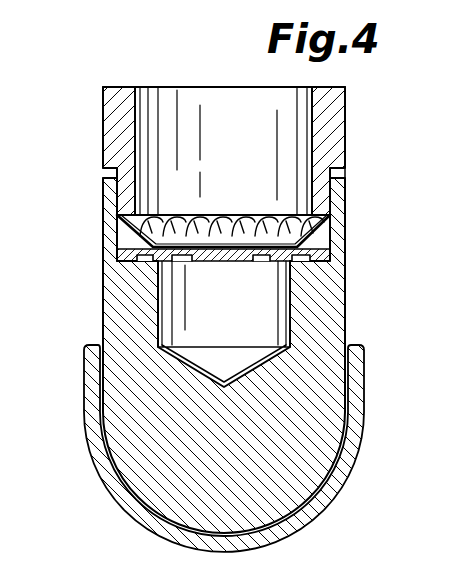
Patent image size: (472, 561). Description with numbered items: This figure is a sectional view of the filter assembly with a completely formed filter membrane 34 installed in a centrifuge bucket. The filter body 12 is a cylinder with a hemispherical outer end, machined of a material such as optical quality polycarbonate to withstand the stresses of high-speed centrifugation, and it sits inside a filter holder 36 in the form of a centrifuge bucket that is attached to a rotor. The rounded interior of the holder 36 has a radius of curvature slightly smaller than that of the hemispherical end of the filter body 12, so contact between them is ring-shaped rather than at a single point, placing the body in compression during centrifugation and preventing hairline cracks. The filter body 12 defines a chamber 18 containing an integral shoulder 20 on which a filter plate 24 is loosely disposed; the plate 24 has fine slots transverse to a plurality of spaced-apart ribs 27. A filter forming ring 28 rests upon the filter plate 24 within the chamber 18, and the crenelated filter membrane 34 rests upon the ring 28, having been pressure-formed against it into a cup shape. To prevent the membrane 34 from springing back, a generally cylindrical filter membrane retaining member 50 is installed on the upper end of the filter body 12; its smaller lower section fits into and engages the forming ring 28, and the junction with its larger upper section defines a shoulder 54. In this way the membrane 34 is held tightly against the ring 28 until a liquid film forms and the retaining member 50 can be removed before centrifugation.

The filter body 12 is at (290, 465).
The chamber 18 is at (255, 316).
The shoulder 20 is at (135, 270).
The filter plate 24 is at (313, 250).
The ribs 27 is at (258, 267).
The filter forming ring 28 is at (323, 227).
The filter membrane 34 is at (290, 208).
The filter holder 36 is at (110, 485).
The filter membrane retaining member 50 is at (327, 100).
The shoulder 54 is at (113, 167).